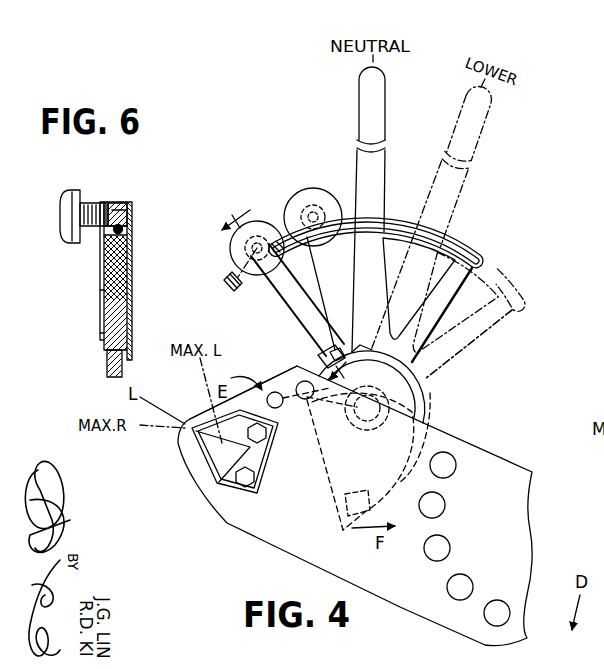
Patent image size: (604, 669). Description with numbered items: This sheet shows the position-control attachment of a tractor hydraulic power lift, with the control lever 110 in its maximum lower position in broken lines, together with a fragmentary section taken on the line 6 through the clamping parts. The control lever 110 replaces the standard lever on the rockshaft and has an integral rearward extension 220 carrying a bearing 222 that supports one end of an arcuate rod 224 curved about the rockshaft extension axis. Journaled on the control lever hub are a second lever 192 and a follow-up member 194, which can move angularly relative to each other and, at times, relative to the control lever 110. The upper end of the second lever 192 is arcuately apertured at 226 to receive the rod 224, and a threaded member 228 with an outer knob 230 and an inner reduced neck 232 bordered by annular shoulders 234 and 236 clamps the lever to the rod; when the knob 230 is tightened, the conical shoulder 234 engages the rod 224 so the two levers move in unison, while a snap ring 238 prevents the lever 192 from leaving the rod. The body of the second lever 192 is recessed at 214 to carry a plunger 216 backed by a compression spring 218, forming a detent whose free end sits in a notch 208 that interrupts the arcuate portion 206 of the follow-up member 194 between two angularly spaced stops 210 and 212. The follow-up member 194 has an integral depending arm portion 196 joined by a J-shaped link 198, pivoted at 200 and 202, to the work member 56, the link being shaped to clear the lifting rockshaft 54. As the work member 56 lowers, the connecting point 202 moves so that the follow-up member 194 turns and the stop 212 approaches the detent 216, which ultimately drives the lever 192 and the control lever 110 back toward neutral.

In FIG. 4, the lifting rockshaft 54 is at (213, 463).
In FIG. 4, the work member 56 is at (428, 616).
In FIG. 4, the control lever 110 is at (359, 121).
In FIG. 6, the second lever 192 is at (100, 299).
In FIG. 4, the second lever 192 is at (275, 300).
In FIG. 6, the follow-up member 194 is at (107, 366).
In FIG. 4, the follow-up member 194 is at (430, 412).
In FIG. 4, the depending arm portion 196 is at (328, 482).
In FIG. 4, the J-shaped link 198 is at (413, 401).
In FIG. 4, the pivotal connection 200 is at (342, 522).
In FIG. 4, the pivotal connection 202 is at (283, 372).
In FIG. 4, the arcuate portion 206 is at (428, 386).
In FIG. 4, the notch 208 is at (370, 368).
In FIG. 4, the notch stop 210 is at (320, 358).
In FIG. 4, the notch stop 212 is at (368, 350).
In FIG. 6, the recess 214 is at (102, 333).
In FIG. 6, the plunger 216 is at (125, 315).
In FIG. 4, the plunger 216 is at (320, 349).
In FIG. 6, the compression spring 218 is at (131, 262).
In FIG. 4, the rearward extension 220 is at (458, 234).
In FIG. 4, the bearing 222 is at (482, 252).
In FIG. 6, the arcuate rod 224 is at (124, 240).
In FIG. 4, the arcuate rod 224 is at (392, 224).
In FIG. 6, the arcuate aperture 226 is at (124, 230).
In FIG. 6, the threaded member 228 is at (92, 204).
In FIG. 4, the threaded member 228 is at (246, 251).
In FIG. 6, the knob 230 is at (62, 214).
In FIG. 4, the knob 230 is at (255, 221).
In FIG. 6, the reduced neck 232 is at (125, 205).
In FIG. 6, the conical shoulder 234 is at (118, 204).
In FIG. 6, the annular shoulder 236 is at (130, 215).
In FIG. 4, the snap ring 238 is at (226, 281).
In FIG. 4, the section line 6— 6 is at (291, 286).